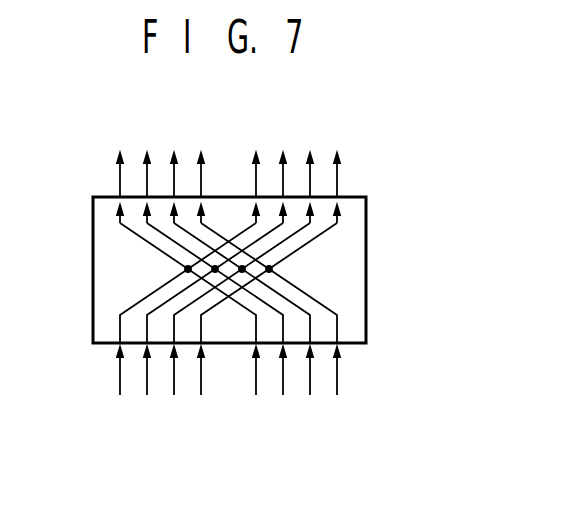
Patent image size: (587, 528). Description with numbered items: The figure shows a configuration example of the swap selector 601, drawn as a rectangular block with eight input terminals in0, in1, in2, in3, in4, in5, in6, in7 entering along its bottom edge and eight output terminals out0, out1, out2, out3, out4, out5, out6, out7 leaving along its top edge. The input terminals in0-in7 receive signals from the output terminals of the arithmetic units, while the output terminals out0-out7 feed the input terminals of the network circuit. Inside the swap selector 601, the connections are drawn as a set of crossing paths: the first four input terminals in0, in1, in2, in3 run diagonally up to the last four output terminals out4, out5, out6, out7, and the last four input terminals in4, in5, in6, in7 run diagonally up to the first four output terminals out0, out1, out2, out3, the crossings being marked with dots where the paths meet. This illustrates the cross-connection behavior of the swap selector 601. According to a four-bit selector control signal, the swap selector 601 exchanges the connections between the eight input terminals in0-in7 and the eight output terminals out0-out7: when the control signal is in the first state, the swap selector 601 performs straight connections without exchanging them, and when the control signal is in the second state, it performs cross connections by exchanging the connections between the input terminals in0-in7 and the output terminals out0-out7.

The swap selector 601 is at (366, 268).
The output terminal out0 is at (118, 154).
The output terminal out1 is at (145, 154).
The output terminal out2 is at (172, 154).
The output terminal out3 is at (199, 154).
The output terminal out4 is at (254, 154).
The output terminal out5 is at (281, 154).
The output terminal out6 is at (308, 154).
The output terminal out7 is at (335, 154).
The input terminal in0 is at (118, 387).
The input terminal in1 is at (145, 387).
The input terminal in2 is at (172, 387).
The input terminal in3 is at (199, 387).
The input terminal in4 is at (254, 387).
The input terminal in5 is at (281, 387).
The input terminal in6 is at (308, 387).
The input terminal in7 is at (335, 387).